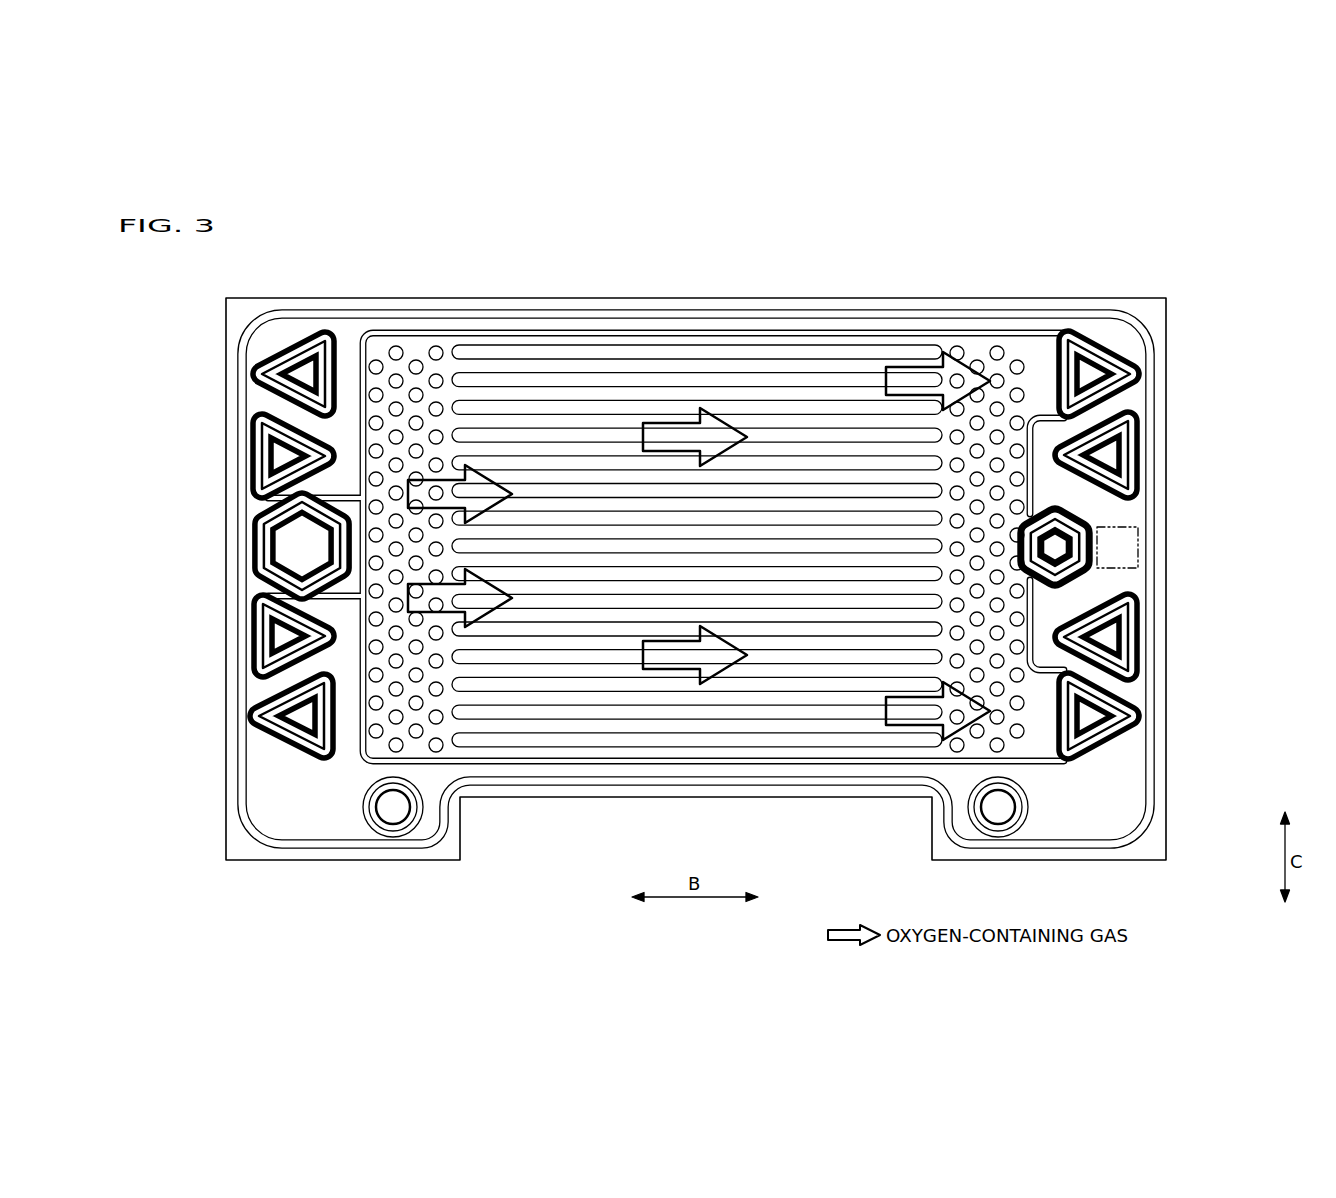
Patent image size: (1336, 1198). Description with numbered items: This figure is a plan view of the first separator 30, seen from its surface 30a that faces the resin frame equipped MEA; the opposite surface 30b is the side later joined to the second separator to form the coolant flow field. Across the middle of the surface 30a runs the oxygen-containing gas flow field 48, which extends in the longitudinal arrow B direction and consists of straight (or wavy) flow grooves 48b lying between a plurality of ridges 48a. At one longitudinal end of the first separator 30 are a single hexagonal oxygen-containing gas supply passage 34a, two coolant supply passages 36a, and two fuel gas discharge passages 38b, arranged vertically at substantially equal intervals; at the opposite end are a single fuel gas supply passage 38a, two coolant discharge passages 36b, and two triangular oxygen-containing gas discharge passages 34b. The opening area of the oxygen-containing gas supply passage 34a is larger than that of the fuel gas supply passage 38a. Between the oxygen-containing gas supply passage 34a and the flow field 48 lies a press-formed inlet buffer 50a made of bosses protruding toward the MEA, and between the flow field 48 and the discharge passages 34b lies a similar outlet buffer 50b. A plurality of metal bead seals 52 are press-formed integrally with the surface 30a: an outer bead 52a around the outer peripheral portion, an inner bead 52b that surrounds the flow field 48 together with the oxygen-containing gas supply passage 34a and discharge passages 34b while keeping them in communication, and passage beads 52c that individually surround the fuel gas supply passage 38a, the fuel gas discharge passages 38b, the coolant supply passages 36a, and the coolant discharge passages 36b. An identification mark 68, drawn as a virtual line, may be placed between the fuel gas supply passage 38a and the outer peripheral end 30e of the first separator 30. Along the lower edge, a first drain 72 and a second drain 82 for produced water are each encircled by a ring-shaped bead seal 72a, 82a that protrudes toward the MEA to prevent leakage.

The first separator 30 is at (330, 260).
The surface of first separator 30a is at (300, 824).
The surface of first separator 30b is at (319, 830).
The outer peripheral end of first separator 30e is at (262, 525).
The oxygen-containing gas supply passage 34a is at (281, 545).
The oxygen-containing gas discharge passage 34b is at (1095, 366).
The coolant supply passage 36a is at (280, 458).
The coolant discharge passage 36b is at (1112, 457).
The fuel gas supply passage 38a is at (1060, 560).
The fuel gas discharge passage 38b is at (290, 378).
The oxygen-containing gas flow field 48 is at (680, 258).
The ridge 48a is at (595, 381).
The flow groove 48b is at (652, 398).
The inlet buffer 50a is at (377, 362).
The outlet buffer 50b is at (1018, 362).
The metal bead seal 52 is at (1229, 668).
The outer bead 52a is at (1152, 737).
The inner bead 52b is at (1140, 709).
The passage bead 52c is at (272, 356).
The identification mark 68 is at (1140, 549).
The first drain 72 is at (999, 812).
The bead seal 72a is at (977, 824).
The second drain 82 is at (393, 812).
The bead seal 82a is at (417, 823).